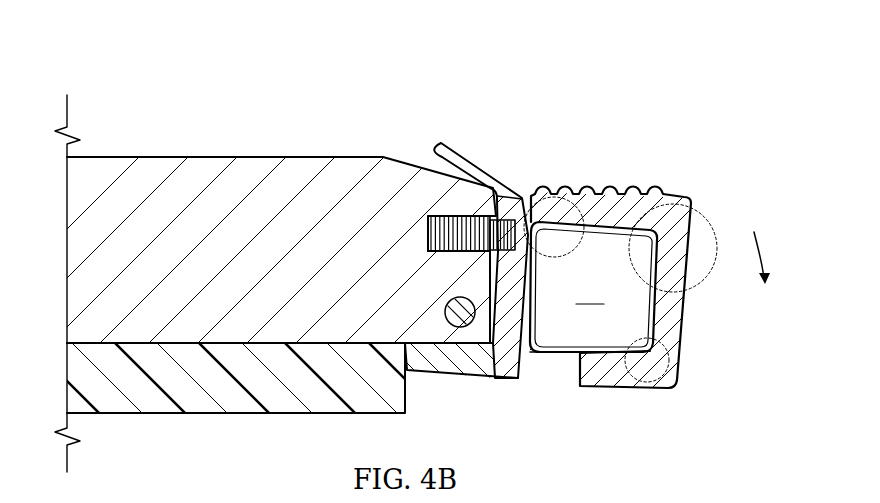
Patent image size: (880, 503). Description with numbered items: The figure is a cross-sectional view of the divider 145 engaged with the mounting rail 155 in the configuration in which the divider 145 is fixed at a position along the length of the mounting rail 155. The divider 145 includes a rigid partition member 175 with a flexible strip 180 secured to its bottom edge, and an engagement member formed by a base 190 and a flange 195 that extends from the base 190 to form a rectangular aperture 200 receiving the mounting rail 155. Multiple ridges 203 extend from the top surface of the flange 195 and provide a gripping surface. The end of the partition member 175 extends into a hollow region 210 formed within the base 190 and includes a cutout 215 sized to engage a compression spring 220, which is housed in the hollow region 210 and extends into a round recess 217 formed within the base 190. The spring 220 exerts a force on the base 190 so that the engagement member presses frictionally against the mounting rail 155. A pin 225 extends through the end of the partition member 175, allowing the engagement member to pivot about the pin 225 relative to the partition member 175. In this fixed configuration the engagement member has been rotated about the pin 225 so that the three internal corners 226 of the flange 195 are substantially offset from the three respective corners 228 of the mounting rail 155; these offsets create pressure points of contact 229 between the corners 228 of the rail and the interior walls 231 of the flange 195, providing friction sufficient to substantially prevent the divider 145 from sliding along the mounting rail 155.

The divider 145 is at (716, 130).
The mounting rail 155 is at (590, 293).
The partition member 175 is at (214, 157).
The flexible strip 180 is at (199, 413).
The base 190 is at (450, 376).
The flange 195 is at (690, 297).
The aperture 200 is at (602, 284).
The ridges 203 is at (637, 178).
The hollow region 210 is at (433, 160).
The cutout 215 is at (427, 243).
The round recess 217 is at (505, 190).
The spring 220 is at (428, 228).
The pin 225 is at (445, 310).
The internal corners 226 is at (545, 190).
The corners 228 is at (586, 188).
The pressure points of contact 229 is at (683, 205).
The interior walls 231 is at (543, 353).